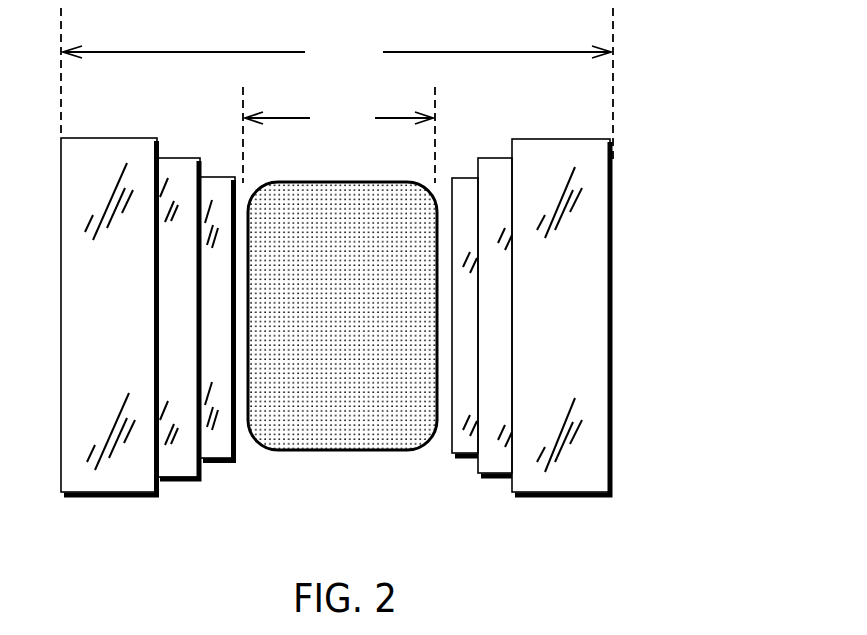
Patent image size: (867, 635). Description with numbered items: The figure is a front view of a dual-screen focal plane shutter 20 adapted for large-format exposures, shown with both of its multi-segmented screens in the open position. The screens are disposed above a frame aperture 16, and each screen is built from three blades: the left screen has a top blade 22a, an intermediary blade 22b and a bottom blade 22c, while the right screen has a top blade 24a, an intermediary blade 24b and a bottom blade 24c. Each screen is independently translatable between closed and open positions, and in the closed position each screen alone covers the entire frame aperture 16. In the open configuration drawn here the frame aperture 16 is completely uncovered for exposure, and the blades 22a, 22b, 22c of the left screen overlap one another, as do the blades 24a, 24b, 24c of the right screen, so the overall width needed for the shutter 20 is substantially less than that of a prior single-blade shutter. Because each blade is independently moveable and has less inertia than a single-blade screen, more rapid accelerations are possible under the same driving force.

The dual-screen focal plane shutter 20 is at (393, 281).
The top blade 22a is at (141, 338).
The intermediary blade 22b is at (182, 478).
The bottom blade 22c is at (227, 463).
The top blade 24a is at (585, 338).
The intermediary blade 24b is at (498, 477).
The bottom blade 24c is at (458, 458).
The frame aperture 16 is at (340, 455).